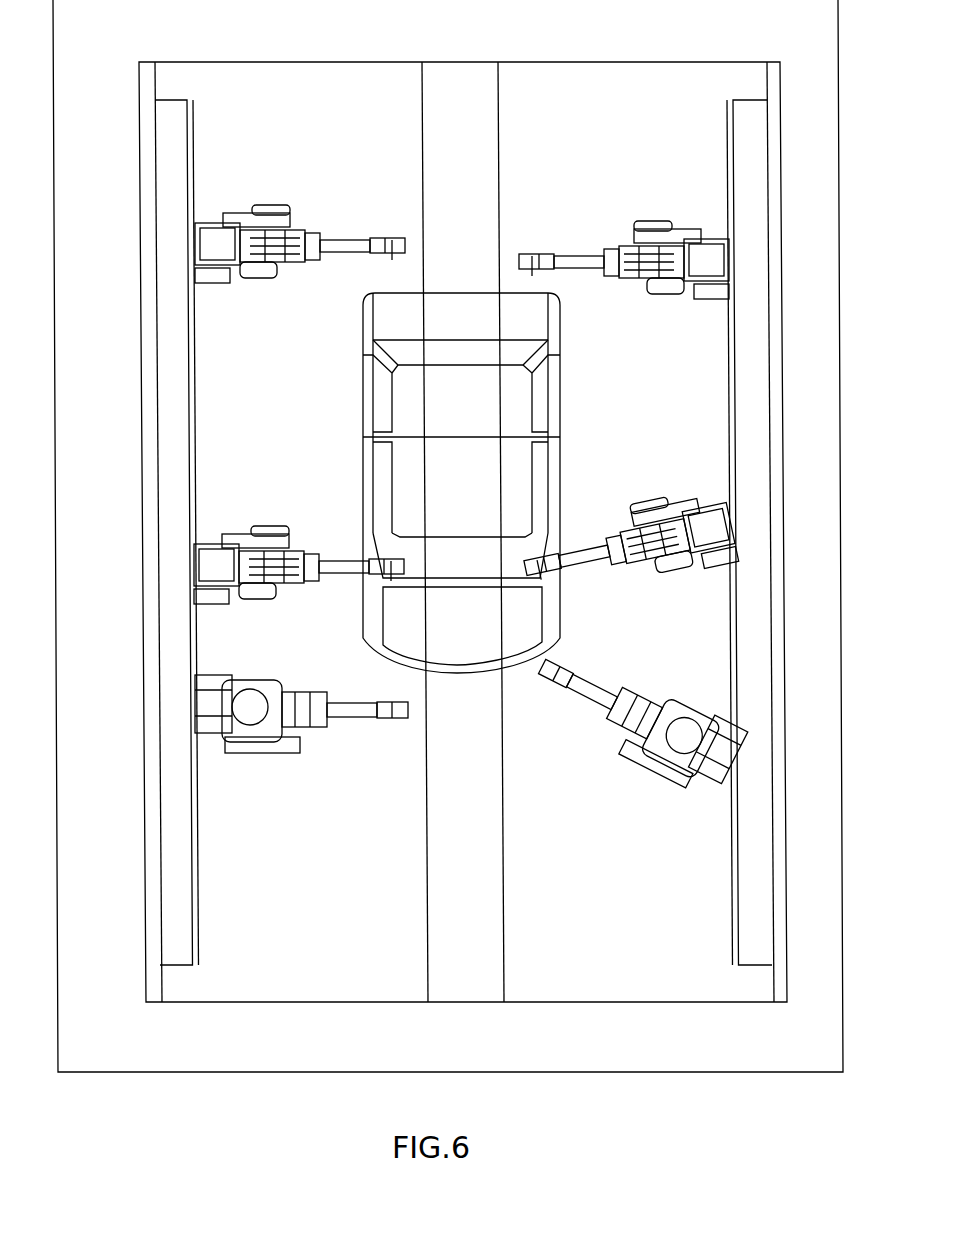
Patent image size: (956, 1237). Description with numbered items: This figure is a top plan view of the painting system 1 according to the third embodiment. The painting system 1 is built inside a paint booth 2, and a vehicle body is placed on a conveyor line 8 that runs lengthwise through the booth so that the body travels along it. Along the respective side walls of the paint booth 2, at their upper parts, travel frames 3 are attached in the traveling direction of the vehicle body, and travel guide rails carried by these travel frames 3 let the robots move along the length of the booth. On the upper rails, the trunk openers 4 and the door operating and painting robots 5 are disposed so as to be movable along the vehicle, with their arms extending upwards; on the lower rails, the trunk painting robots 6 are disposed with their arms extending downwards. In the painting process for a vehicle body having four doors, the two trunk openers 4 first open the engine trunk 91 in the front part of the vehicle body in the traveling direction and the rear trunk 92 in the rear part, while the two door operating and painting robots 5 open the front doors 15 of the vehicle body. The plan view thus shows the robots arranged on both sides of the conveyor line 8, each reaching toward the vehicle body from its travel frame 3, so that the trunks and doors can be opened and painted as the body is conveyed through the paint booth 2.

The painting system 1 is at (545, 102).
The paint booth 2 is at (777, 177).
The travel frame 3 is at (173, 615).
The trunk opener 4 is at (213, 240).
The door operating and painting robot 5 is at (703, 263).
The trunk painting robot 6 is at (272, 706).
The conveyor line 8 is at (472, 817).
The front door 15 is at (364, 500).
The engine trunk 91 is at (472, 632).
The rear trunk 92 is at (455, 307).